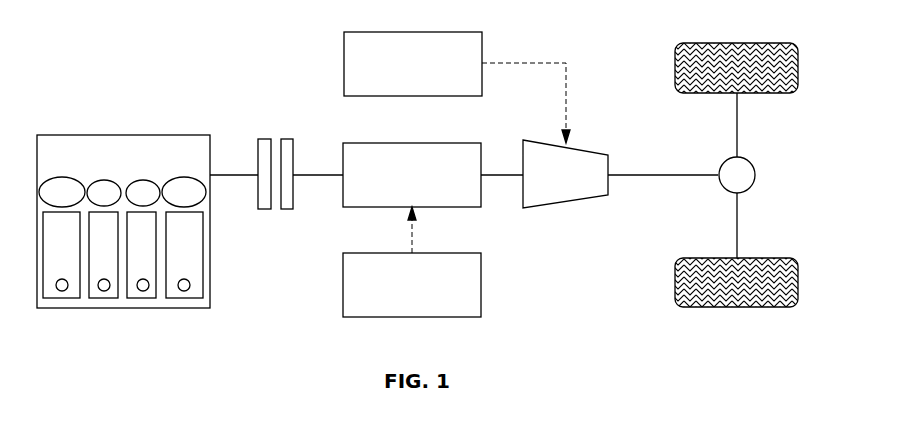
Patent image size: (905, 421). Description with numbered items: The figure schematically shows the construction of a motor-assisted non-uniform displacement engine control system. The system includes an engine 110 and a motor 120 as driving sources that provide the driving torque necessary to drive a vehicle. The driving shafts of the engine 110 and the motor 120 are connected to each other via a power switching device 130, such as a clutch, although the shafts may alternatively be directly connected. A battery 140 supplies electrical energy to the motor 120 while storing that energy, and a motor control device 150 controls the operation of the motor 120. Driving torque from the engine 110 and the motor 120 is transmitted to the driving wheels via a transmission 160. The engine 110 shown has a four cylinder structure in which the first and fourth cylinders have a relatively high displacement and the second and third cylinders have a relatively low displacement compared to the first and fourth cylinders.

The engine 110 is at (118, 135).
The motor 120 is at (343, 147).
The power switching device 130 is at (287, 139).
The battery 140 is at (343, 295).
The motor control device 150 is at (343, 52).
The transmission 160 is at (583, 147).